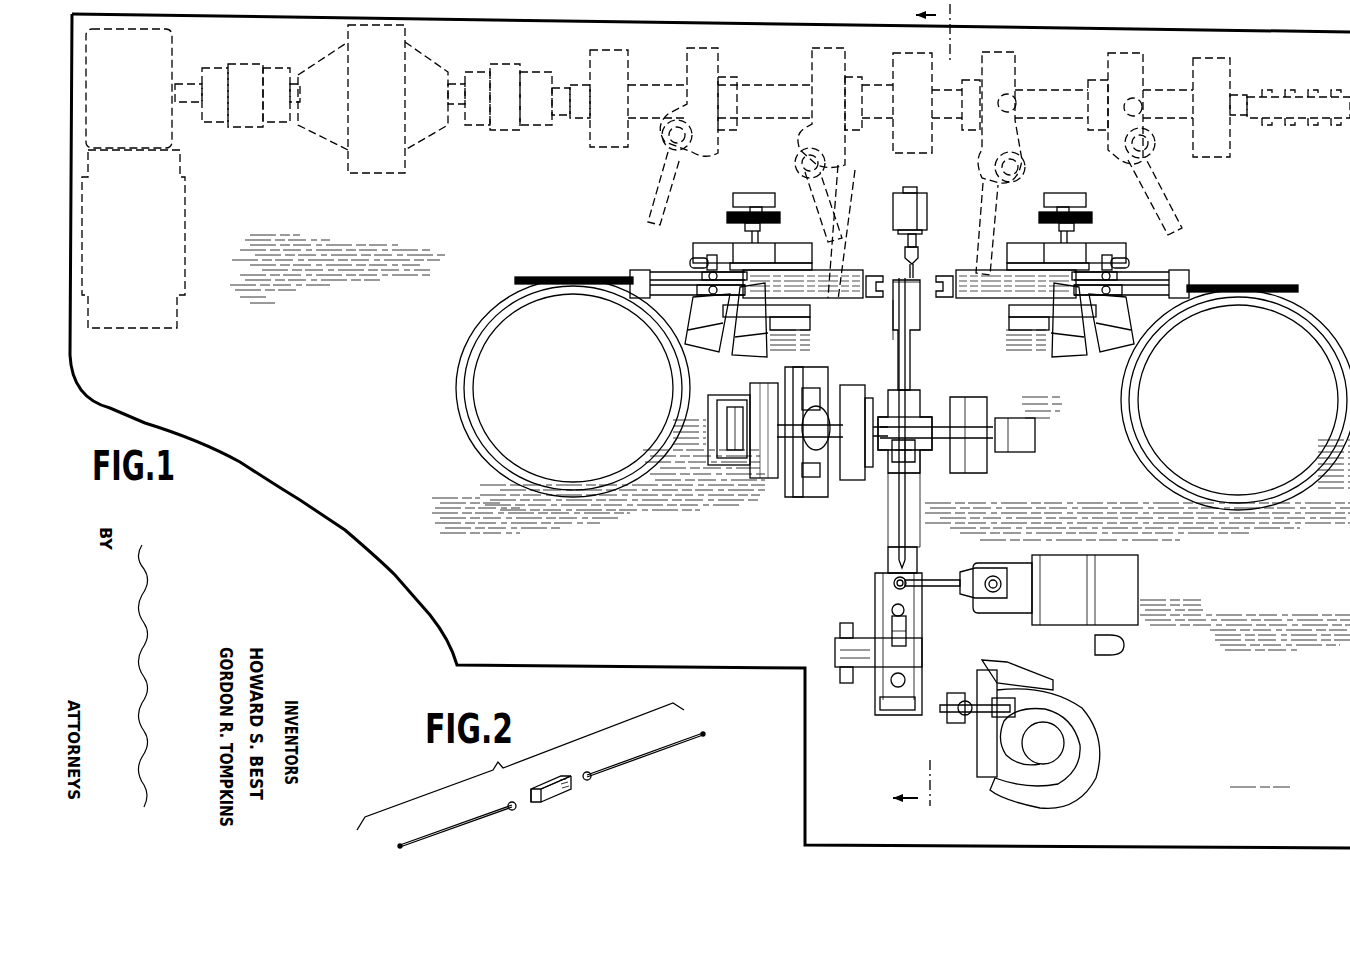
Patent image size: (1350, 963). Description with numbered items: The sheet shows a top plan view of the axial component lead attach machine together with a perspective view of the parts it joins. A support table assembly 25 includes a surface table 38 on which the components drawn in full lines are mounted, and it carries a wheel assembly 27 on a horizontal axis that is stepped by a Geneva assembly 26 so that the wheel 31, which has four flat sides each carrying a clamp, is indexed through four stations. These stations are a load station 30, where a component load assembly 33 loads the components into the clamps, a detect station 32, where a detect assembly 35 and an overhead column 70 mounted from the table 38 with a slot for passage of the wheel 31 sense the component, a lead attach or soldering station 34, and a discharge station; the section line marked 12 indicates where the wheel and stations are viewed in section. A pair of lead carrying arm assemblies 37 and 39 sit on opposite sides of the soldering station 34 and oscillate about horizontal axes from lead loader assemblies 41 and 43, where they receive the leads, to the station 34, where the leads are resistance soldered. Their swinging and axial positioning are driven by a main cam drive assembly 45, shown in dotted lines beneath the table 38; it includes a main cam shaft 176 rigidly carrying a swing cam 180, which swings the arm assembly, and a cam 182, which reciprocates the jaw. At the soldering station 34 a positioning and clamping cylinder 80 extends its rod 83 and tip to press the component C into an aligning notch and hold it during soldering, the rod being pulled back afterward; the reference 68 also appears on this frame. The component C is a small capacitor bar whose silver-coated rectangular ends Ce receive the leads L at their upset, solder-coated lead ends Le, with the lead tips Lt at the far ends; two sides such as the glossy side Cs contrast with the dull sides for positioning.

In FIG. 1, the section line 12- 12 is at (937, 407).
In FIG. 1, the support table assembly 25 is at (436, 639).
In FIG. 1, the Geneva assembly 26 is at (762, 495).
In FIG. 1, the wheel assembly 27 is at (885, 506).
In FIG. 1, the load station 30 is at (876, 575).
In FIG. 1, the wheel 31 is at (907, 520).
In FIG. 1, the detect station 32 is at (928, 412).
In FIG. 1, the component load assembly 33 is at (1048, 645).
In FIG. 1, the lead attach or soldering station 34 is at (927, 280).
In FIG. 1, the detect assembly 35 is at (920, 442).
In FIG. 1, the lead carrying arm assembly 37 is at (838, 304).
In FIG. 1, the surface table 38 is at (564, 617).
In FIG. 1, the lead carrying arm assembly 39 is at (1000, 286).
In FIG. 1, the lead loader assembly 41 is at (620, 262).
In FIG. 1, the lead loader assembly 43 is at (1222, 252).
In FIG. 1, the main cam drive assembly 45 is at (546, 131).
In FIG. 1, the support frame 68 is at (893, 598).
In FIG. 1, the overhead column 70 is at (1002, 428).
In FIG. 1, the positioning and clamping cylinder 80 is at (918, 214).
In FIG. 1, the rod 83 is at (905, 252).
In FIG. 1, the main cam shaft 176 is at (746, 115).
In FIG. 1, the swing cam 180 is at (720, 62).
In FIG. 1, the cam 182 is at (858, 50).
In FIG. 2, the lead L is at (472, 825).
In FIG. 2, the lead tip Lt is at (400, 849).
In FIG. 2, the upset lead end Le is at (512, 800).
In FIG. 2, the component C is at (558, 797).
In FIG. 2, the glossy side Cs is at (553, 786).
In FIG. 2, the rectangular end Ce is at (534, 801).